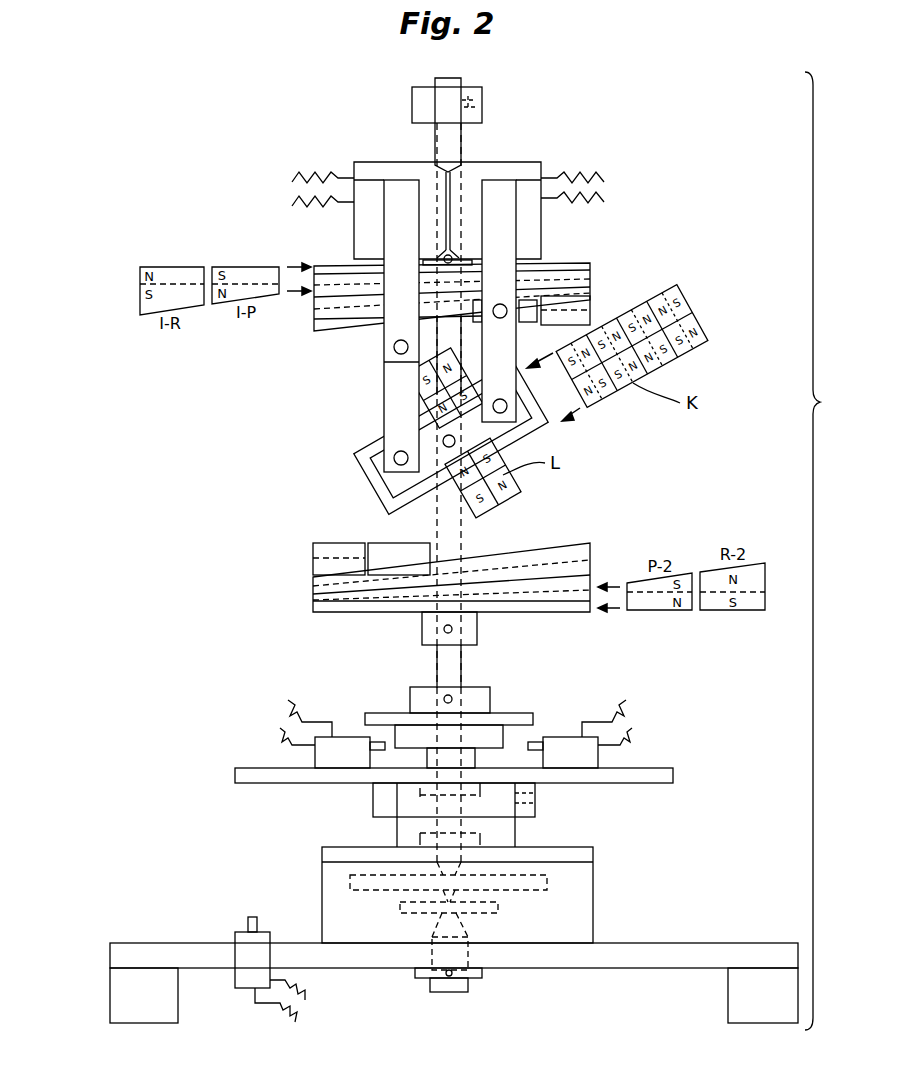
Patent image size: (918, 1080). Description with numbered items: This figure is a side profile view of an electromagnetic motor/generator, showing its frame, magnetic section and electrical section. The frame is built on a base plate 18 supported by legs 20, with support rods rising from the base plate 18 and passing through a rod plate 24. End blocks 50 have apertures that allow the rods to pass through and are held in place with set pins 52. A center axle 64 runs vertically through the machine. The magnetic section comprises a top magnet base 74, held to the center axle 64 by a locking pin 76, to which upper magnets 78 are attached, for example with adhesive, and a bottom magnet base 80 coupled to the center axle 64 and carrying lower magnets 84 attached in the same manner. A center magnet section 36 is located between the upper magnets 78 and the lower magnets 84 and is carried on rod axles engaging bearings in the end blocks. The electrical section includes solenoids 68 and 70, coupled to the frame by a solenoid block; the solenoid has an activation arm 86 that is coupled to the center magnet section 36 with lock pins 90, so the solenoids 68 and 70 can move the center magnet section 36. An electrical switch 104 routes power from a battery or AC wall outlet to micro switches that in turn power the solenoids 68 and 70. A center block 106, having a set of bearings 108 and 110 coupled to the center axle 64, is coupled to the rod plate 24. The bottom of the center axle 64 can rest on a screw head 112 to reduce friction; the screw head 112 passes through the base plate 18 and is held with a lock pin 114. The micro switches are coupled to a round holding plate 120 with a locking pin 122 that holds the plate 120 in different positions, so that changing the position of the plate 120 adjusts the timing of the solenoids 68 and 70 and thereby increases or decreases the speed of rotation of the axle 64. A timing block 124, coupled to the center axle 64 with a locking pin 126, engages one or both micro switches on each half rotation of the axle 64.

The base plate 18 is at (800, 945).
The legs 20 is at (454, 995).
The rod plate 24 is at (322, 850).
The center magnet section 36 is at (363, 448).
The end blocks 50 is at (430, 87).
The set pins 52 is at (470, 95).
The center axle 64 is at (432, 512).
The solenoid 68 is at (378, 162).
The solenoid 70 is at (536, 160).
The top magnet base 74 is at (577, 262).
The locking pin 76 is at (354, 215).
The upper magnets 78 is at (596, 258).
The bottom magnet base 80 is at (385, 613).
The lower magnets 84 is at (306, 543).
The activation arm 86 is at (385, 347).
The lock pins 90 is at (380, 486).
The electrical switch 104 is at (243, 990).
The center block 106 is at (520, 832).
The bearing 108 is at (415, 793).
The bearing 110 is at (420, 838).
The screw head 112 is at (457, 993).
The lock pin 114 is at (447, 976).
The holding plate 120 is at (660, 770).
The locking pin 122 is at (538, 800).
The timing block 124 is at (483, 697).
The locking pin 126 is at (444, 699).